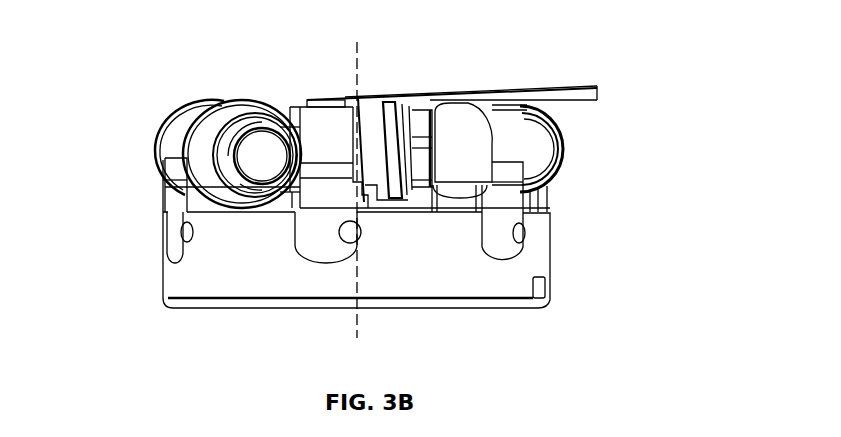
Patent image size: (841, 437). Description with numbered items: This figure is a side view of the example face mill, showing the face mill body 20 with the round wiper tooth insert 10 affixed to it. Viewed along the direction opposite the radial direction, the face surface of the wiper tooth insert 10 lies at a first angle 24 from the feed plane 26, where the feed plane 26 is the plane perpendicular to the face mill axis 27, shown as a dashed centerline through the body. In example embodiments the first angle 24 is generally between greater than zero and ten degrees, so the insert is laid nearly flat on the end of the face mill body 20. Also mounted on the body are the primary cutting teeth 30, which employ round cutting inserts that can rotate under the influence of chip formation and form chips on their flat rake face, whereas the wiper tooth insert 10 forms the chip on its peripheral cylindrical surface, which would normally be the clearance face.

The wiper tooth insert 10 is at (310, 98).
The face mill body 20 is at (122, 256).
The first angle 24 is at (594, 92).
The feed plane 26 is at (576, 101).
The face mill axis 27 is at (359, 54).
The primary cutting teeth 30 is at (211, 180).